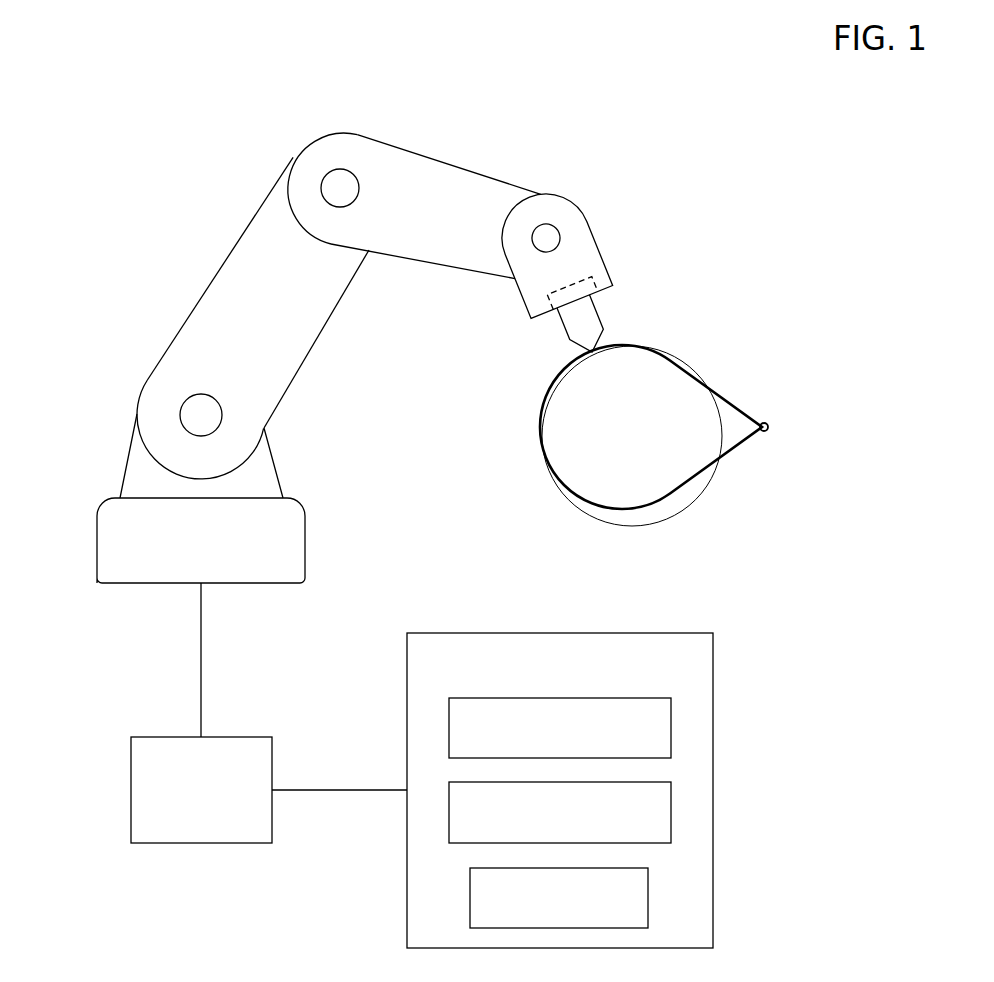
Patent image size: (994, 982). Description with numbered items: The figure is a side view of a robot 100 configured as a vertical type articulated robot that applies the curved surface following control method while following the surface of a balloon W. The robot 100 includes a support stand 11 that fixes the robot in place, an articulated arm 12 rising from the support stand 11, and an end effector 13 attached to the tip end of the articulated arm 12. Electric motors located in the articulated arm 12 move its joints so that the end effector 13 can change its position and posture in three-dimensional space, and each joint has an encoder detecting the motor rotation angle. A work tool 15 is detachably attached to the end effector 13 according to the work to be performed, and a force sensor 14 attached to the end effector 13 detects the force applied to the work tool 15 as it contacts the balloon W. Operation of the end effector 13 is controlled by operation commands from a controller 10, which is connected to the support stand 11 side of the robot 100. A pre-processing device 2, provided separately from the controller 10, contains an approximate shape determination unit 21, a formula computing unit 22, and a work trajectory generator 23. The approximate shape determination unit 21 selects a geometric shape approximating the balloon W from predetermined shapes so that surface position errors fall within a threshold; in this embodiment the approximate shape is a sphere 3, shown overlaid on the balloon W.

The robot 100 is at (151, 184).
The support stand 11 is at (295, 547).
The articulated arm 12 is at (262, 403).
The end effector 13 is at (585, 223).
The force sensor 14 is at (594, 277).
The work tool 15 is at (582, 351).
The balloon W is at (733, 457).
The sphere 3 is at (612, 527).
The controller 10 is at (130, 796).
The pre-processing device 2 is at (405, 660).
The approximate shape determination unit 21 is at (671, 727).
The formula computing unit 22 is at (671, 812).
The work trajectory generator 23 is at (648, 897).